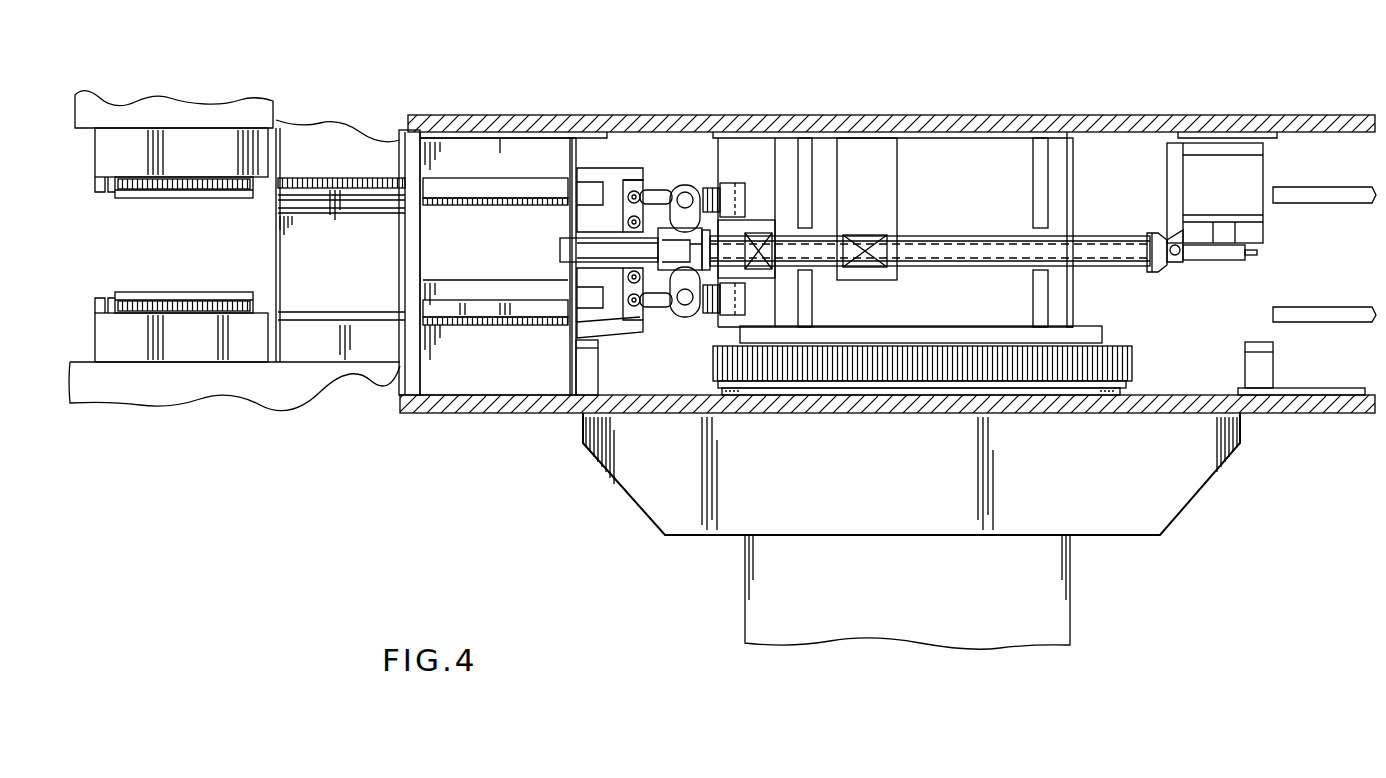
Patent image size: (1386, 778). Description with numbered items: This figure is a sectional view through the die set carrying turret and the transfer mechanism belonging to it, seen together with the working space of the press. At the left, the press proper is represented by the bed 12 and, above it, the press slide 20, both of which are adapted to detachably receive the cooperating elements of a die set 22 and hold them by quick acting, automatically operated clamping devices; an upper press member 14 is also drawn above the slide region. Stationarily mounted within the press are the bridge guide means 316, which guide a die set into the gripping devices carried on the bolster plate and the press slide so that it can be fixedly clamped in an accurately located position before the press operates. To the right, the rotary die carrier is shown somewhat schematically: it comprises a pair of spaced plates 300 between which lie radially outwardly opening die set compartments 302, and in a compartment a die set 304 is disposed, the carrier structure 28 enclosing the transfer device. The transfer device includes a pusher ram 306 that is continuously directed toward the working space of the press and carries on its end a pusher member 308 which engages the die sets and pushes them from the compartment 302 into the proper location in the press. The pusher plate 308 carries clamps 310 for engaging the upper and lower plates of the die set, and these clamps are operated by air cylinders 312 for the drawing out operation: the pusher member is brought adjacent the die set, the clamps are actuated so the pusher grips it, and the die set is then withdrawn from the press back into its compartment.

The bed 12 is at (230, 392).
The upper plate 14 is at (252, 106).
The press slide 20 is at (145, 115).
The die set 22 is at (508, 188).
The housing 28 is at (955, 118).
The spaced plates 300 is at (403, 130).
The die set compartment 302 is at (425, 378).
The die set 304 is at (462, 305).
The pusher ram 306 is at (978, 230).
The pusher member 308 is at (588, 268).
The clamps 310 is at (620, 172).
The air cylinders 312 is at (718, 188).
The bridge guide means 316 is at (285, 254).